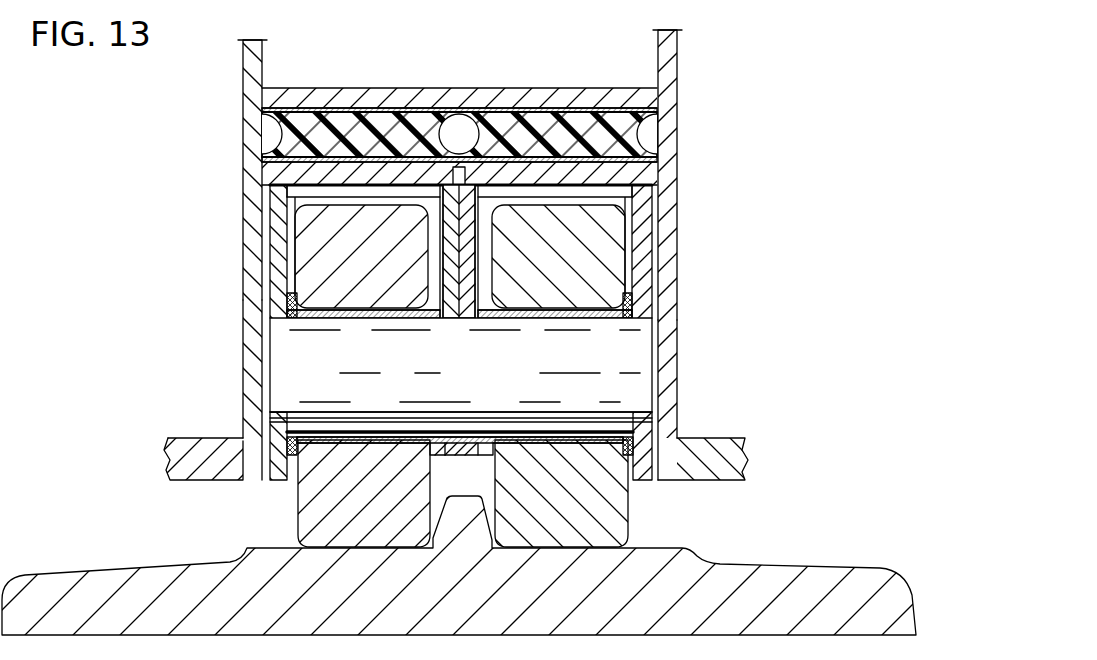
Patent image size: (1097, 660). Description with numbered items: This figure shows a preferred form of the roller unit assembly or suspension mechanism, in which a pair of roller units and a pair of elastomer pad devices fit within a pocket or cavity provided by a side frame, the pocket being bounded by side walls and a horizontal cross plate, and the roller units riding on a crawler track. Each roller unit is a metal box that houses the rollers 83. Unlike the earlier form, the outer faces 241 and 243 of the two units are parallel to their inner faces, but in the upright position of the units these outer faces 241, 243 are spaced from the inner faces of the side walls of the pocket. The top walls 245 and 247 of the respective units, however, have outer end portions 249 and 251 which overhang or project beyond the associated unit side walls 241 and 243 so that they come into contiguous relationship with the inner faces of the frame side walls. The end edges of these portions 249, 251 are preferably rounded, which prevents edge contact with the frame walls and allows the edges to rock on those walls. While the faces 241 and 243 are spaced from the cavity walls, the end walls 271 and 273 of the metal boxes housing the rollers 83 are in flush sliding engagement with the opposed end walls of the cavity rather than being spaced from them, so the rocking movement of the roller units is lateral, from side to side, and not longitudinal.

The rollers 83 is at (305, 513).
The outer face 241 is at (276, 277).
The outer face 243 is at (651, 246).
The top wall 245 is at (350, 172).
The top wall 247 is at (530, 170).
The outer end portion 249 is at (243, 240).
The outer end portion 251 is at (655, 176).
The end wall 271 is at (297, 197).
The end wall 273 is at (625, 196).